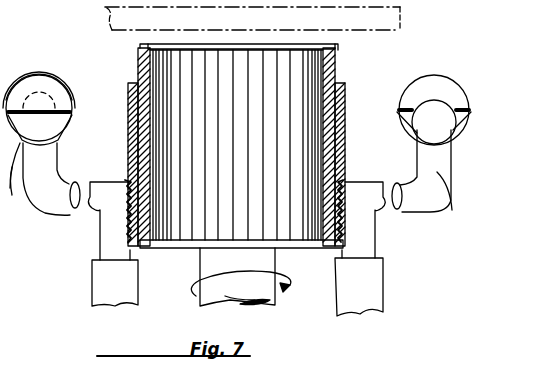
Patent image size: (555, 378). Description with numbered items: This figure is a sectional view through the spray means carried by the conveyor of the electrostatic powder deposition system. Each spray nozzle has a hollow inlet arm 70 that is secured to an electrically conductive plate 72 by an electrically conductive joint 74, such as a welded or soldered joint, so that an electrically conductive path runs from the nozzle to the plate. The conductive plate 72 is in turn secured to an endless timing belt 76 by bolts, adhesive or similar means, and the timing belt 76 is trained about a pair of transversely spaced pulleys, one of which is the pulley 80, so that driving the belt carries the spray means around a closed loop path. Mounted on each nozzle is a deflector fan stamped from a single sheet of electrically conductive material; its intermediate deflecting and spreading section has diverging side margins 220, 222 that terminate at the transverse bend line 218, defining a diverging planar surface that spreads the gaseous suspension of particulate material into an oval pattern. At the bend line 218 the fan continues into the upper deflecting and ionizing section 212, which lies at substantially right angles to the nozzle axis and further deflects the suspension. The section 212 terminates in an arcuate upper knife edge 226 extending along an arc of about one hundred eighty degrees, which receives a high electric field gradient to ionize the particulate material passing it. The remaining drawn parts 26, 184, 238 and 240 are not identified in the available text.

The tank wall 26 is at (405, 20).
The hollow inlet arm 70 is at (53, 197).
The electrically conductive plate 72 is at (128, 92).
The electrically conductive joint 74 is at (127, 181).
The timing belt 76 is at (333, 47).
The pulley 80 is at (203, 225).
The support block 184 is at (110, 283).
The upper deflecting and ionizing section 212 is at (37, 64).
The transverse bend line 218 is at (60, 107).
The diverging side margin 220 is at (67, 124).
The diverging side margin 222 is at (16, 189).
The arcuate upper knife edge 226 is at (47, 72).
The seal 238 is at (336, 60).
The flange 240 is at (138, 84).